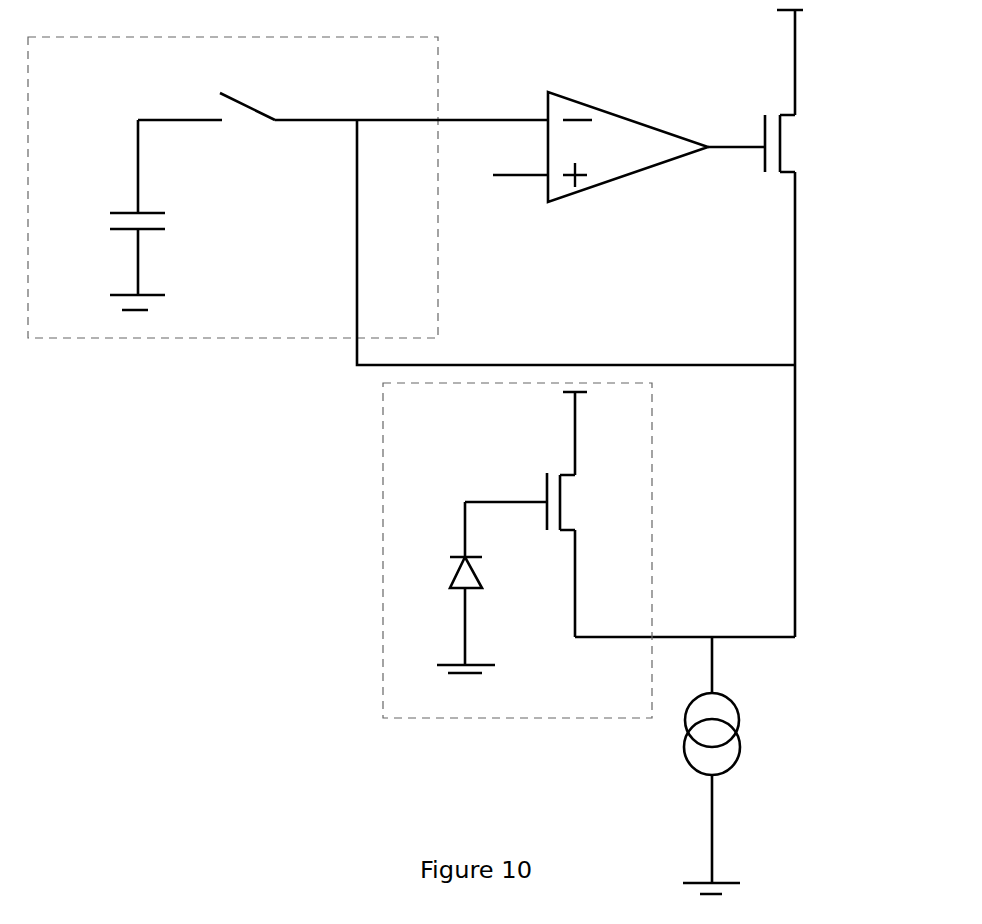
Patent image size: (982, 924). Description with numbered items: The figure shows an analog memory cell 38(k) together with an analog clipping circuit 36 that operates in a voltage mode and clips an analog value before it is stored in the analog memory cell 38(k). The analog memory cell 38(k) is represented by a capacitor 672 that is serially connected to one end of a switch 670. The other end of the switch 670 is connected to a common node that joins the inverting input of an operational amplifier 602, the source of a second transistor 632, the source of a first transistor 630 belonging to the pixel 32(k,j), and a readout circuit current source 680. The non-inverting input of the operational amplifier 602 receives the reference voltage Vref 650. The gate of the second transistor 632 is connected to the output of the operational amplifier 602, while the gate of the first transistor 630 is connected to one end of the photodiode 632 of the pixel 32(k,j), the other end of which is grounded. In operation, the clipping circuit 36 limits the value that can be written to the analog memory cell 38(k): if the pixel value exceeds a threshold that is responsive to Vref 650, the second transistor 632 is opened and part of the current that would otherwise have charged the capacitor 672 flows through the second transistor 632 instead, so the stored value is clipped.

The analog memory cell 38 is at (233, 338).
The switch 670 is at (343, 125).
The capacitor 672 is at (160, 215).
The operational amplifier 602 is at (656, 147).
The reference voltage Vref 650 is at (503, 188).
The second transistor 632 is at (428, 595).
The analog clipping circuit 36 is at (862, 510).
The pixel 32 is at (383, 550).
The first transistor 630 is at (536, 514).
The readout circuit current source 680 is at (770, 765).